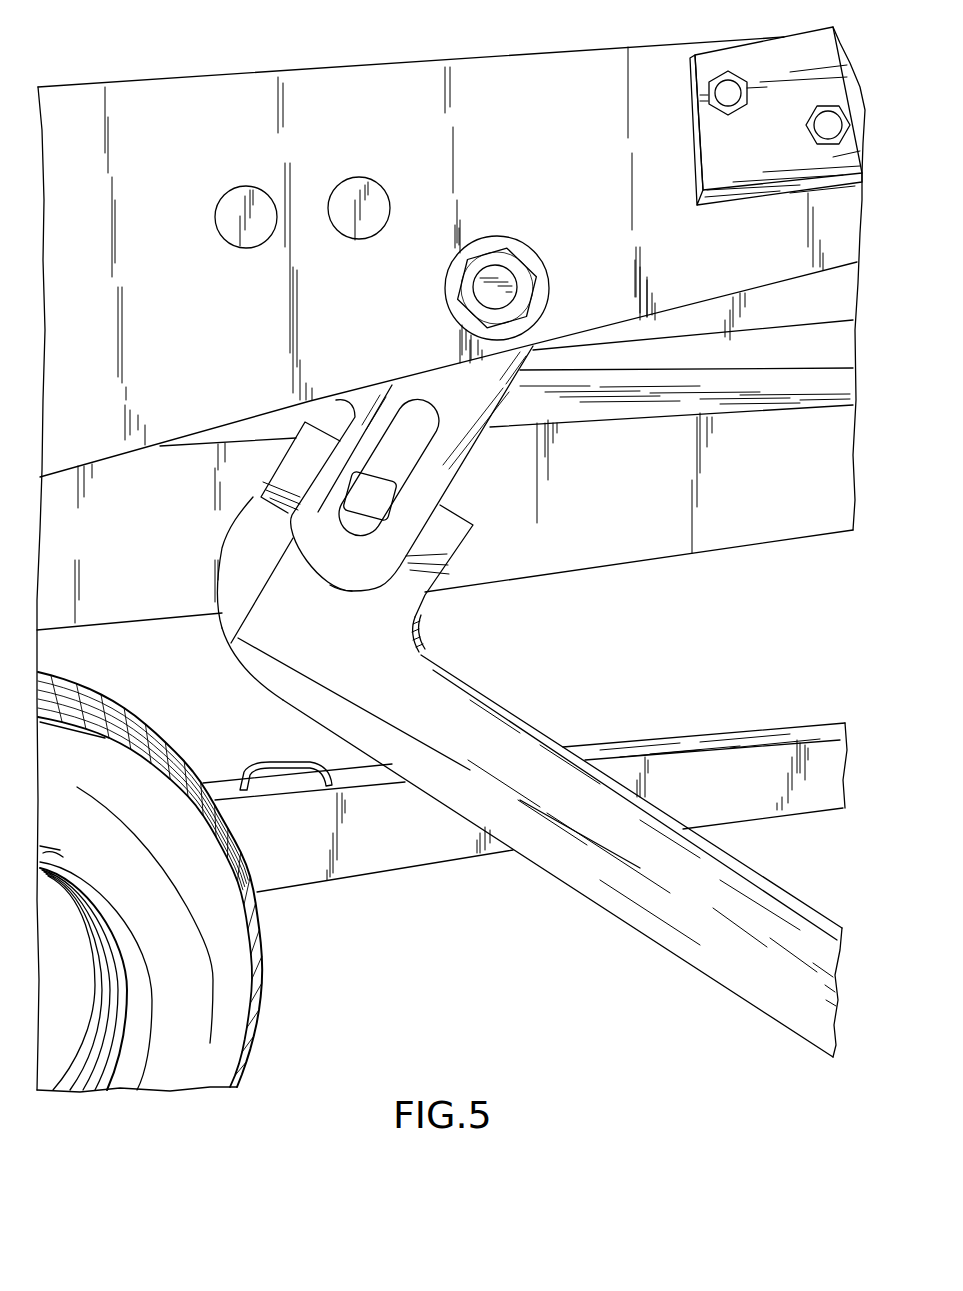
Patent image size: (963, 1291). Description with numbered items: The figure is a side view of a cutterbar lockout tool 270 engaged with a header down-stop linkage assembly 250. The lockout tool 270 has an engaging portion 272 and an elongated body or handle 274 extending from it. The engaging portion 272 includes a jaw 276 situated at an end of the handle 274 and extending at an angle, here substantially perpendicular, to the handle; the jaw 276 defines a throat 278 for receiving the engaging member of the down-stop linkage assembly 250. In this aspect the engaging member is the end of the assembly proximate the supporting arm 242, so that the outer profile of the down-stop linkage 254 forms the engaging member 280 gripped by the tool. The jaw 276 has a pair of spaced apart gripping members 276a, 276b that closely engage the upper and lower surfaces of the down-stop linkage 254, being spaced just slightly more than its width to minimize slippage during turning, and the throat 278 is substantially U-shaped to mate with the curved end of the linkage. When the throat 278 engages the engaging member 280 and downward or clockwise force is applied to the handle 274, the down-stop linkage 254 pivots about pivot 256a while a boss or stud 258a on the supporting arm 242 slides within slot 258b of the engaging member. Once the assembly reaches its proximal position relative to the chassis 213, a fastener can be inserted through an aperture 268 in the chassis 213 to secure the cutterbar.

The chassis 213 is at (248, 55).
The aperture 268 is at (349, 178).
The pivot 256a is at (493, 250).
The down-stop linkage assembly 250 is at (492, 450).
The supporting arm 242 is at (781, 543).
The lockout tool 270 is at (557, 634).
The down-stop linkage 254 is at (470, 463).
The engaging member 280 is at (447, 492).
The jaw 276 is at (453, 593).
The gripping member 276a is at (254, 503).
The gripping member 276b is at (453, 557).
The throat 278 is at (426, 632).
The engaging portion 272 is at (279, 698).
The handle 274 is at (539, 729).
The boss or stud 258a is at (341, 577).
The slot 258b is at (234, 636).